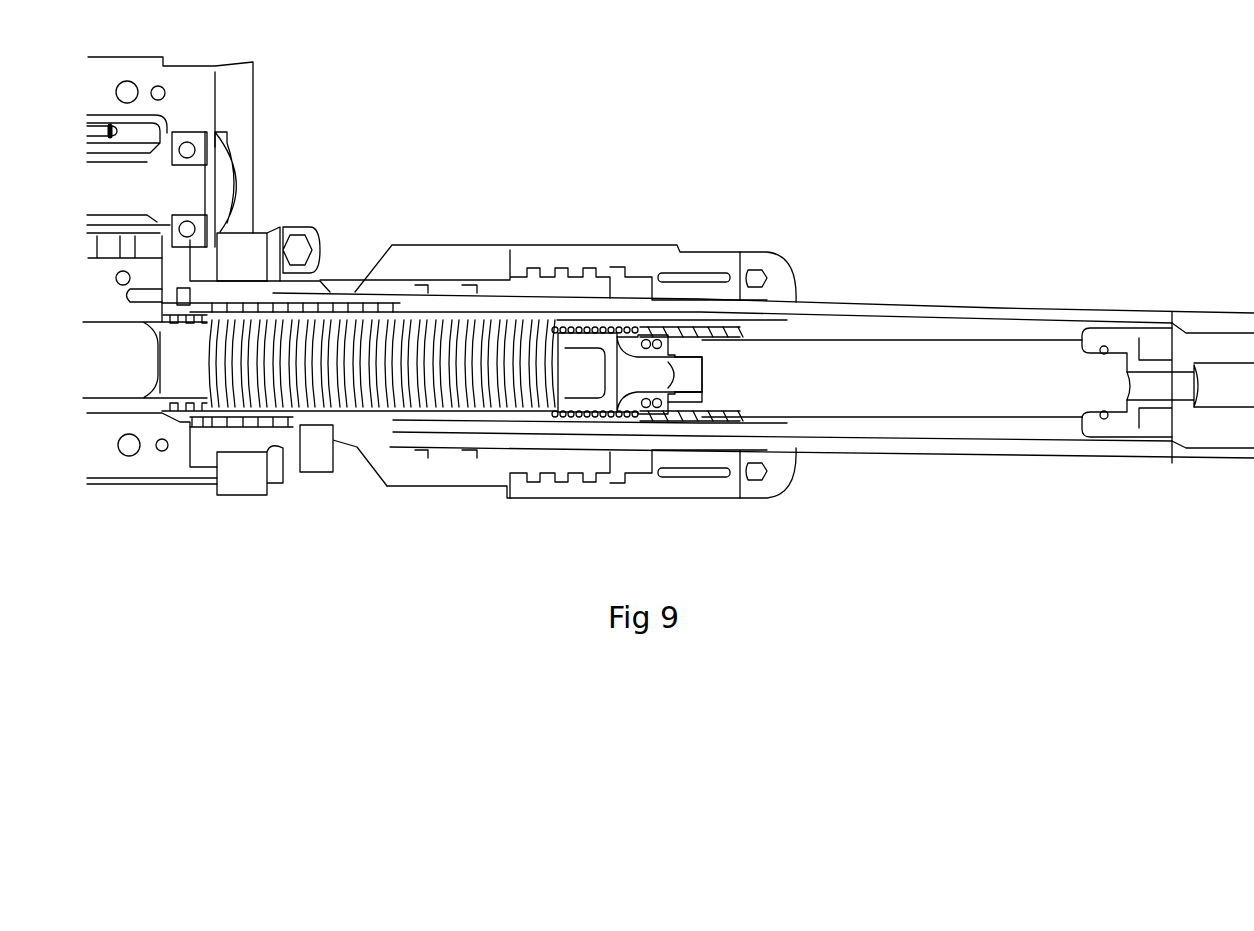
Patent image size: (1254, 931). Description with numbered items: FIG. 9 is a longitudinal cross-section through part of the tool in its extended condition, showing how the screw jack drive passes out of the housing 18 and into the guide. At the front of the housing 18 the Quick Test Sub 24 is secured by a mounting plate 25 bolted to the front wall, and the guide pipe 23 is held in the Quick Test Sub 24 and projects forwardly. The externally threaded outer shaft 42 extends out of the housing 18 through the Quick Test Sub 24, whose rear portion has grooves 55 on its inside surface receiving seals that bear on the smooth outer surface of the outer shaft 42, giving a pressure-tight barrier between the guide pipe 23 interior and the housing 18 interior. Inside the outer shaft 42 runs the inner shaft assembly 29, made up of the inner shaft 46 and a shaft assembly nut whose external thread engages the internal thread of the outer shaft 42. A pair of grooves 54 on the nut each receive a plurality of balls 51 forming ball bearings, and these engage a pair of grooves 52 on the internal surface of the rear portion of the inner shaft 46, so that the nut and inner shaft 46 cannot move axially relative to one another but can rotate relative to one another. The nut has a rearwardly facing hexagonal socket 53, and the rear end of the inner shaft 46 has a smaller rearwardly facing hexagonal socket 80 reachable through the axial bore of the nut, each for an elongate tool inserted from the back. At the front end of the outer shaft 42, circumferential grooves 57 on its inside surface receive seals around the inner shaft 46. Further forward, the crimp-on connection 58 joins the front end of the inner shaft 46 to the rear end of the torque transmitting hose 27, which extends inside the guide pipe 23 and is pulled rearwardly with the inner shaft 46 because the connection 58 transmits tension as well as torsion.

The housing 18 is at (253, 126).
The mounting plate 25 is at (272, 247).
The Quick Test Sub 24 is at (536, 242).
The hexagonal socket 53 is at (583, 358).
The grooves 54 is at (612, 342).
The hexagonal socket 80 is at (689, 360).
The guide pipe 23 is at (913, 310).
The connection 58 is at (1112, 329).
The grooves 55 is at (222, 425).
The outer shaft 42 is at (362, 412).
The inner shaft assembly 29 is at (570, 417).
The grooves 52 is at (608, 404).
The balls 51 is at (693, 395).
The grooves 57 is at (701, 392).
The inner shaft 46 is at (843, 383).
The torque transmitting hose 27 is at (1219, 422).